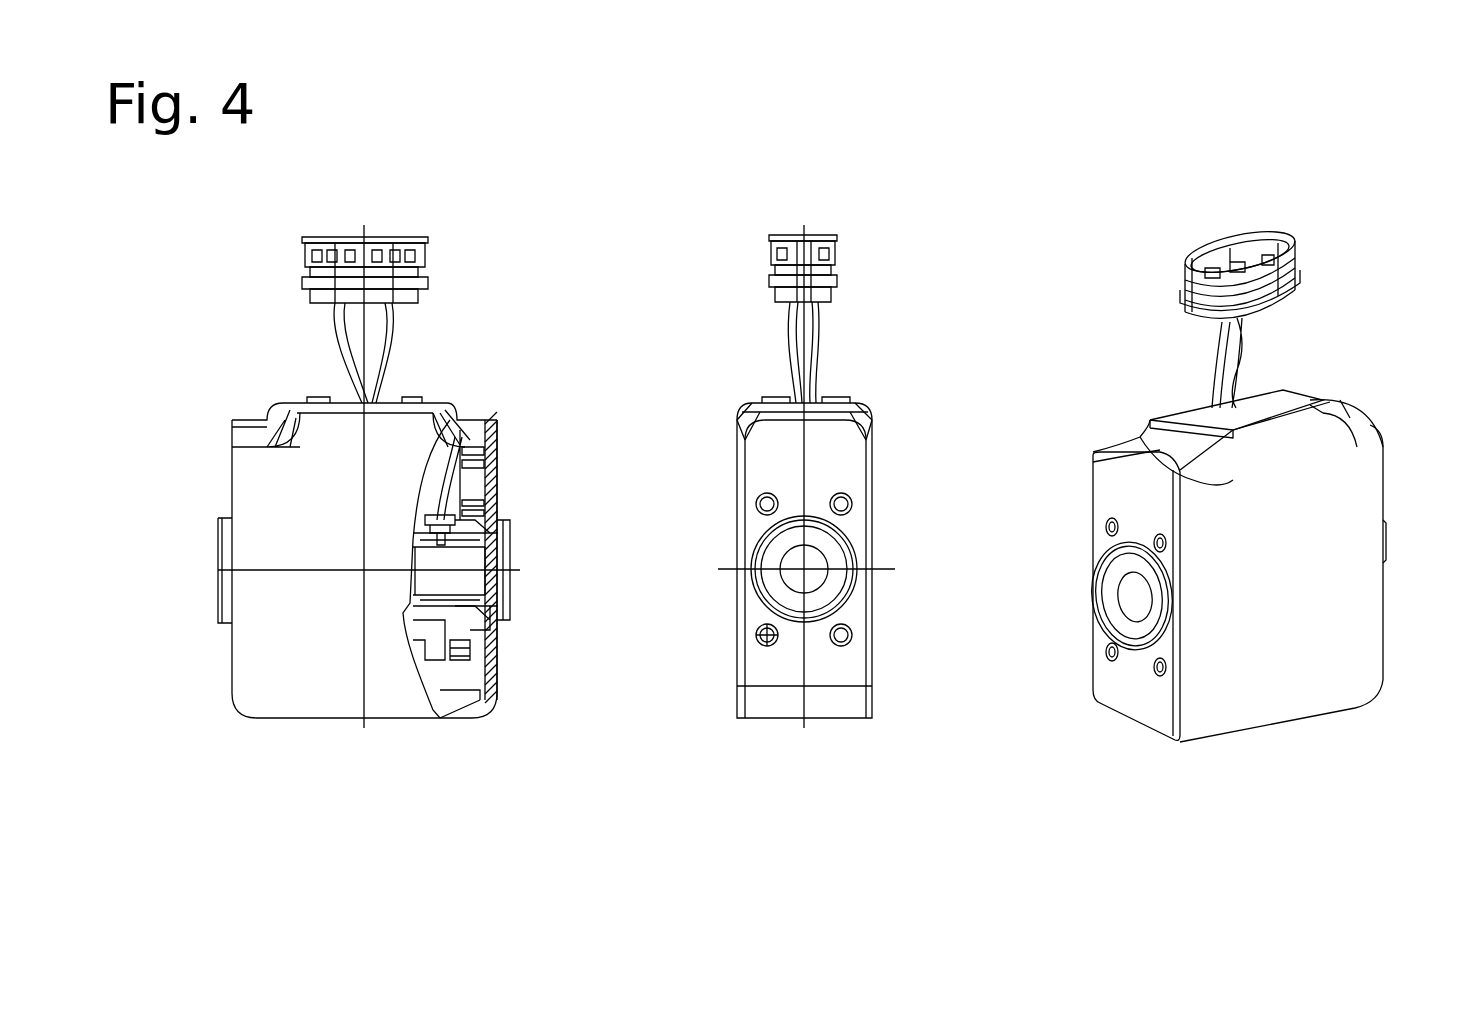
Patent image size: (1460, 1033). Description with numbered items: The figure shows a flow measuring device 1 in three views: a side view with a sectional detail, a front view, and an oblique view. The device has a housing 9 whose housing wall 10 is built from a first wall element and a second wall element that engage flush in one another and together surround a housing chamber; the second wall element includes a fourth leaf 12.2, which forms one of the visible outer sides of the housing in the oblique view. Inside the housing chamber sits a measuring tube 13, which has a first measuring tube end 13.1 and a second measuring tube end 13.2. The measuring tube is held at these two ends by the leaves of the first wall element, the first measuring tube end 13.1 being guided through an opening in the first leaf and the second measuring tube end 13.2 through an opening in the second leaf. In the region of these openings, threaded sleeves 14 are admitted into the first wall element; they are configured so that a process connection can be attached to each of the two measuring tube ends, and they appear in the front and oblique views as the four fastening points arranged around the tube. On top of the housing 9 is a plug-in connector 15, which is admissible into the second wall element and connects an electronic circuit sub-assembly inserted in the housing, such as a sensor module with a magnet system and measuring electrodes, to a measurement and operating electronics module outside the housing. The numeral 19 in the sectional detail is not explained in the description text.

The flow measuring device 1 is at (240, 352).
The housing 9 is at (735, 400).
The housing wall 10 is at (247, 462).
The fourth leaf 12.2 is at (1358, 645).
The measuring tube 13 is at (503, 594).
The first measuring tube end 13.1 is at (223, 592).
The second measuring tube end 13.2 is at (478, 555).
The threaded sleeves 14 is at (1147, 663).
The plug-in connector 15 is at (745, 285).
The circuit board 19 is at (500, 451).